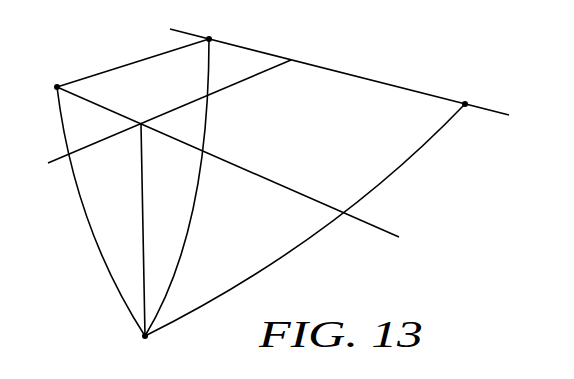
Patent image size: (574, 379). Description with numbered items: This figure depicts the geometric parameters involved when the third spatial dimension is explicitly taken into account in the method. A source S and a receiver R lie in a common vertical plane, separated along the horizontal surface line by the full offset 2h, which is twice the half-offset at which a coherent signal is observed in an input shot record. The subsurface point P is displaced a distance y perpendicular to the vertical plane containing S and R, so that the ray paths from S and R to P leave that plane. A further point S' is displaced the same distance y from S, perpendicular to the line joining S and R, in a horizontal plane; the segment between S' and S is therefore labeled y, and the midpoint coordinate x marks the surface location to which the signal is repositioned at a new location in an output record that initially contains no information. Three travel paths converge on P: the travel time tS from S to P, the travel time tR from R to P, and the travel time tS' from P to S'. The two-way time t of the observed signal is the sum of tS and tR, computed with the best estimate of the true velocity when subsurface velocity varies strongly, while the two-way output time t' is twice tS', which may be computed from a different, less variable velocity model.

The source point S is at (210, 27).
The displaced source point S' is at (50, 75).
The receiver point R is at (466, 92).
The subsurface point P is at (144, 351).
The midpoint x is at (228, 162).
The perpendicular displacement distance y is at (133, 63).
The source-receiver offset 2h is at (339, 72).
The travel time from S to P tS is at (181, 187).
The travel time from P to S' tS' is at (101, 211).
The travel time from R to P tR is at (305, 220).